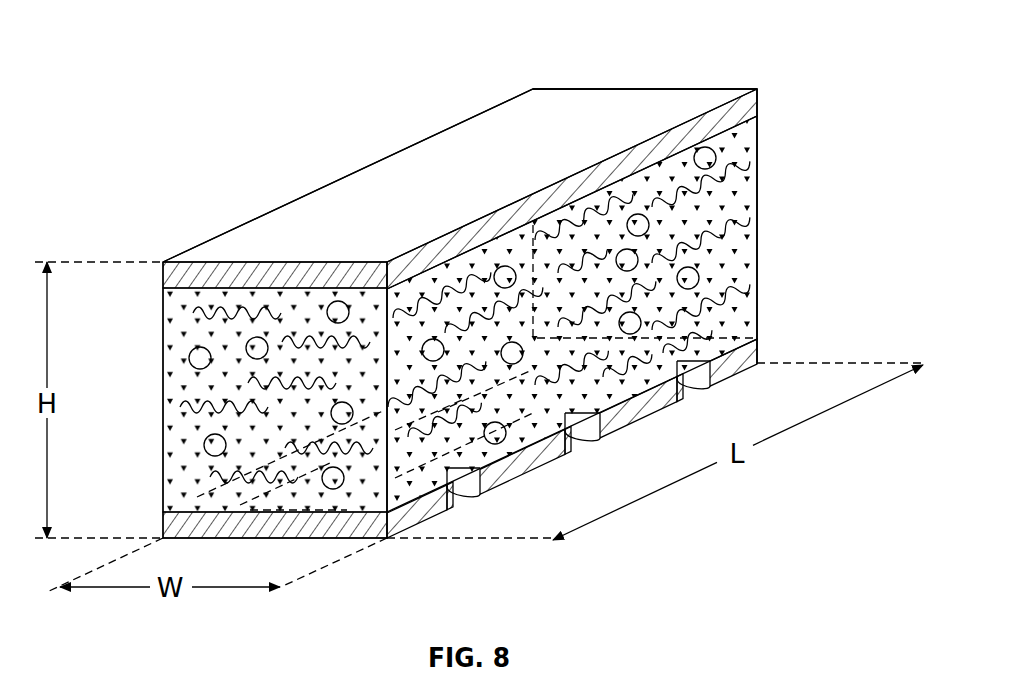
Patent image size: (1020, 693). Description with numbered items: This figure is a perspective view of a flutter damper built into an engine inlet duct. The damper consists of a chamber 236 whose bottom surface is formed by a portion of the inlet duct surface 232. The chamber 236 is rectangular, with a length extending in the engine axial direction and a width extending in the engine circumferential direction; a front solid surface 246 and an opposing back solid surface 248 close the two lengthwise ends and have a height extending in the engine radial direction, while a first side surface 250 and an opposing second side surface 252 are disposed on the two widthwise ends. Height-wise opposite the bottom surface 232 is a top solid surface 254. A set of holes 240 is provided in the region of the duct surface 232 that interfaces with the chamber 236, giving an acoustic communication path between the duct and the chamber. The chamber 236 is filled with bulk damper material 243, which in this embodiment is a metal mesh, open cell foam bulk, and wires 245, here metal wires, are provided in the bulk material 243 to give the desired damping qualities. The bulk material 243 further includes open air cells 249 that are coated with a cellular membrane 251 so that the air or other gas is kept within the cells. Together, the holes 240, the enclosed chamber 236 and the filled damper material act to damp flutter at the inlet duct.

The inlet duct surface 232 is at (172, 527).
The chamber 236 is at (728, 52).
The holes 240 is at (575, 445).
The bulk damper material 243 is at (725, 200).
The wires 245 is at (740, 230).
The front solid surface 246 is at (172, 307).
The back solid surface 248 is at (783, 160).
The open air cells 249 is at (716, 152).
The first side surface 250 is at (403, 475).
The cellular membrane 251 is at (705, 147).
The second side surface 252 is at (203, 166).
The top solid surface 254 is at (362, 192).